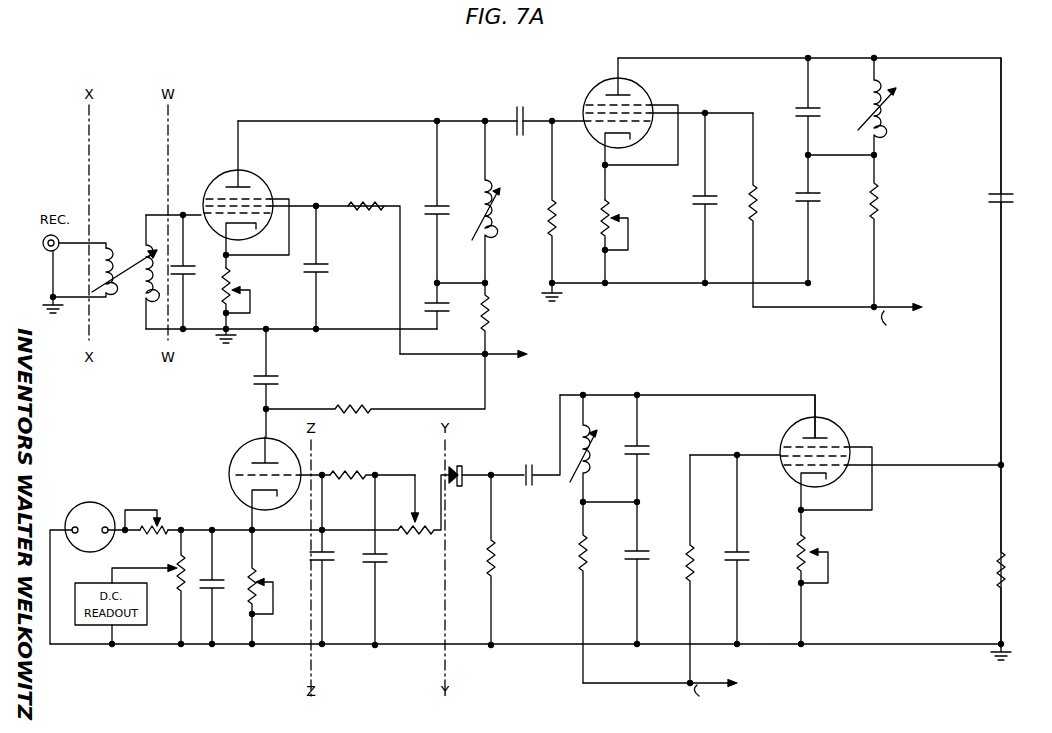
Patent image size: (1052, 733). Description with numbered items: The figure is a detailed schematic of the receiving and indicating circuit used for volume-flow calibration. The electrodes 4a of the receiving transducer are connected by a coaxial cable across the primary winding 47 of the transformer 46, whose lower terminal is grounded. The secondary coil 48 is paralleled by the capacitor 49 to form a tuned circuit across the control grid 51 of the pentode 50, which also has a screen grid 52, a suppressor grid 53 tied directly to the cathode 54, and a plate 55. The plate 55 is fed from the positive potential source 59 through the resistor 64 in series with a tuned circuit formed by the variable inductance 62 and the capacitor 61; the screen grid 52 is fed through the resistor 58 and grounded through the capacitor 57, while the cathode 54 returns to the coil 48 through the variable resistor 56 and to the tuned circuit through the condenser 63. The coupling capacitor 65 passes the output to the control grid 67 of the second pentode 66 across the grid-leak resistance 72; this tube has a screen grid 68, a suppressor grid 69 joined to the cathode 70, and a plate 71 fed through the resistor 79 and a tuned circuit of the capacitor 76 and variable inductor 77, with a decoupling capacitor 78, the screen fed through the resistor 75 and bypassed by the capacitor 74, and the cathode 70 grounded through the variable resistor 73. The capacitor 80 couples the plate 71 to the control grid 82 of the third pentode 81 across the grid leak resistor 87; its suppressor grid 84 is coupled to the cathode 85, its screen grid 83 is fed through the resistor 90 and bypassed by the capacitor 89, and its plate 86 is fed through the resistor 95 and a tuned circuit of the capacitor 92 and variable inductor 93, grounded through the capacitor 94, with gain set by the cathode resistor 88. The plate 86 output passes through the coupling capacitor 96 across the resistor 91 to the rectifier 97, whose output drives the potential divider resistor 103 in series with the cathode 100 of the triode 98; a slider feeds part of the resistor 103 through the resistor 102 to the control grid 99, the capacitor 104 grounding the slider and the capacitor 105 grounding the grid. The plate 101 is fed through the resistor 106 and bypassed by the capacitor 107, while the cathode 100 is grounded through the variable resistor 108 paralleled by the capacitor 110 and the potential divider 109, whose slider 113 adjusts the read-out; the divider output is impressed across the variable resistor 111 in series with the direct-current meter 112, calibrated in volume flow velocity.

The electrodes 4a is at (47, 252).
The transformer 46 is at (124, 254).
The primary winding 47 is at (100, 270).
The secondary coil 48 is at (158, 272).
The capacitor 49 is at (188, 270).
The pentode 50 is at (232, 170).
The control grid 51 is at (221, 219).
The screen grid 52 is at (215, 204).
The suppressor grid 53 is at (263, 195).
The cathode 54 is at (247, 233).
The plate 55 is at (246, 184).
The variable resistor 56 is at (222, 278).
The capacitor 57 is at (323, 264).
The resistor 58 is at (353, 201).
The positive potential source 59 is at (494, 357).
The capacitor 61 is at (440, 214).
The inductance 62 is at (492, 218).
The condenser 63 is at (440, 310).
The resistor 64 is at (492, 312).
The coupling capacitor 65 is at (522, 104).
The pentode 66 is at (608, 80).
The control grid 67 is at (598, 127).
The screen grid 68 is at (597, 109).
The suppressor grid 69 is at (642, 106).
The cathode 70 is at (601, 141).
The plate 71 is at (629, 93).
The grid-leak resistance 72 is at (557, 215).
The variable resistor 73 is at (630, 222).
The capacitor 74 is at (718, 213).
The resistor 75 is at (761, 205).
The capacitor 76 is at (815, 108).
The inductor 77 is at (886, 112).
The decoupling capacitor 78 is at (823, 198).
The resistor 79 is at (886, 195).
The capacitor 80 is at (1016, 199).
The pentode 81 is at (835, 426).
The control grid 82 is at (795, 466).
The screen grid 83 is at (795, 456).
The suppressor grid 84 is at (838, 446).
The cathode 85 is at (820, 484).
The plate 86 is at (805, 433).
The grid leak resistor 87 is at (1008, 556).
The cathode resistor 88 is at (810, 546).
The capacitor 89 is at (742, 551).
The resistor 90 is at (694, 551).
The resistor 91 is at (500, 557).
The capacitor 92 is at (648, 446).
The variable inductor 93 is at (594, 456).
The capacitor 94 is at (640, 548).
The resistor 95 is at (590, 541).
The coupling capacitor 96 is at (530, 471).
The rectifier 97 is at (462, 470).
The triode 98 is at (259, 438).
The control grid 99 is at (244, 476).
The cathode 100 is at (265, 500).
The plate 101 is at (256, 460).
The resistor 102 is at (348, 468).
The resistor 103 is at (419, 538).
The capacitor 104 is at (366, 558).
The capacitor 105 is at (309, 559).
The resistor 106 is at (345, 408).
The capacitor 107 is at (262, 374).
The variable resistor 108 is at (246, 592).
The potential divider 109 is at (172, 561).
The capacitor 110 is at (206, 591).
The variable resistor 111 is at (161, 519).
The direct-current meter 112 is at (98, 503).
The slider 113 is at (137, 568).